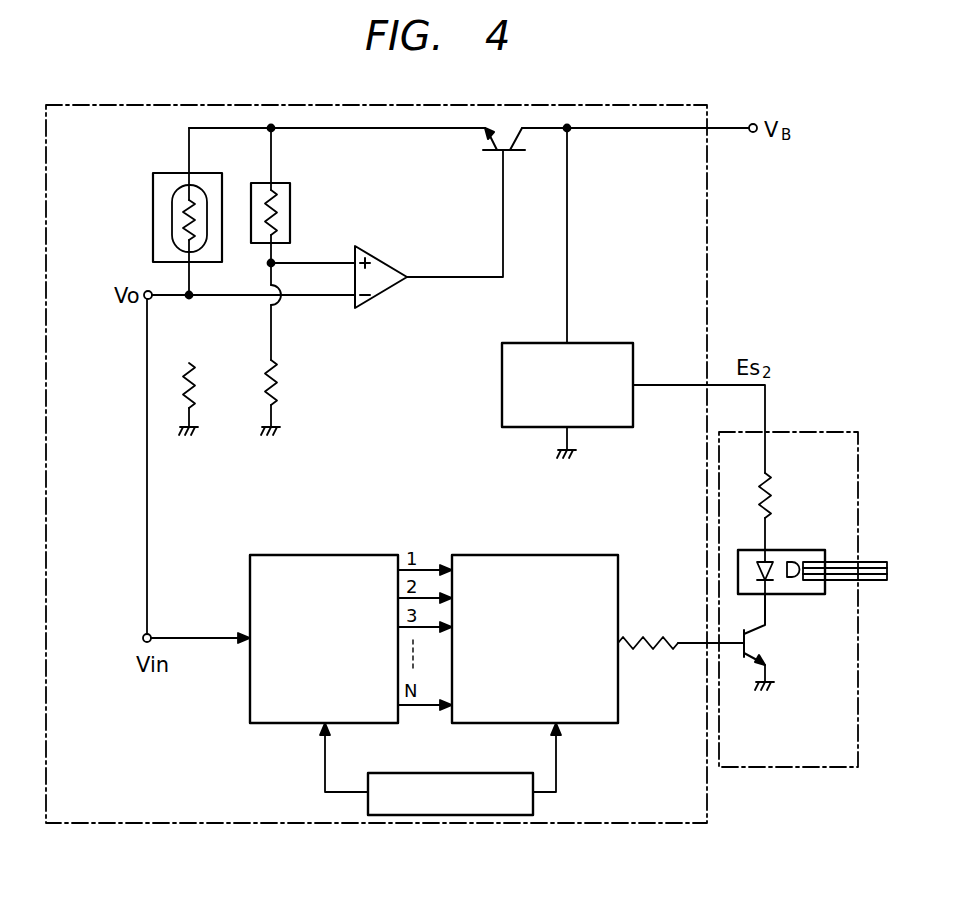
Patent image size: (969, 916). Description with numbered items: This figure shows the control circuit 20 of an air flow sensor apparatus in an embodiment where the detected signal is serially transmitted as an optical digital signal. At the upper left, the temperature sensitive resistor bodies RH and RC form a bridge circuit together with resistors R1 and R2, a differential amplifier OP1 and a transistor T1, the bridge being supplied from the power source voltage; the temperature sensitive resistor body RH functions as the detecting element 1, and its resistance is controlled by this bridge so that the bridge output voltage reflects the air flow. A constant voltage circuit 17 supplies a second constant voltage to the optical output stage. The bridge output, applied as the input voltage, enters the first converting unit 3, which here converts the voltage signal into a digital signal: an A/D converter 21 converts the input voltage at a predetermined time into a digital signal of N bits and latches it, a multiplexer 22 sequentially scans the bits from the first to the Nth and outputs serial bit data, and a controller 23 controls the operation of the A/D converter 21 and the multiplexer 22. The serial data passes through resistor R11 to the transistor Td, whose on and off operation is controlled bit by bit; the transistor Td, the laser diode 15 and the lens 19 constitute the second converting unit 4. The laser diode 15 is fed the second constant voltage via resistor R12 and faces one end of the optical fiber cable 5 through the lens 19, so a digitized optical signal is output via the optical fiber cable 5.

The detecting element 1 is at (161, 246).
The first converting unit 3 is at (388, 512).
The second converting unit 4 is at (817, 768).
The optical fiber cable 5 is at (867, 562).
The laser diode 15 is at (738, 565).
The constant voltage circuit 17 is at (608, 343).
The lens 19 is at (794, 560).
The control circuit 20 is at (200, 824).
The A/D converter 21 is at (272, 555).
The multiplexer 22 is at (563, 555).
The controller 23 is at (480, 773).
The temperature sensitive resistor body RH is at (172, 212).
The temperature sensitive resistor body RC is at (291, 198).
The resistor R1 is at (204, 399).
The resistor R2 is at (286, 397).
The resistor R11 is at (681, 628).
The resistor R12 is at (789, 511).
The transistor T1 is at (516, 155).
The transistor Td is at (757, 646).
The differential amplifier OP1 is at (384, 262).